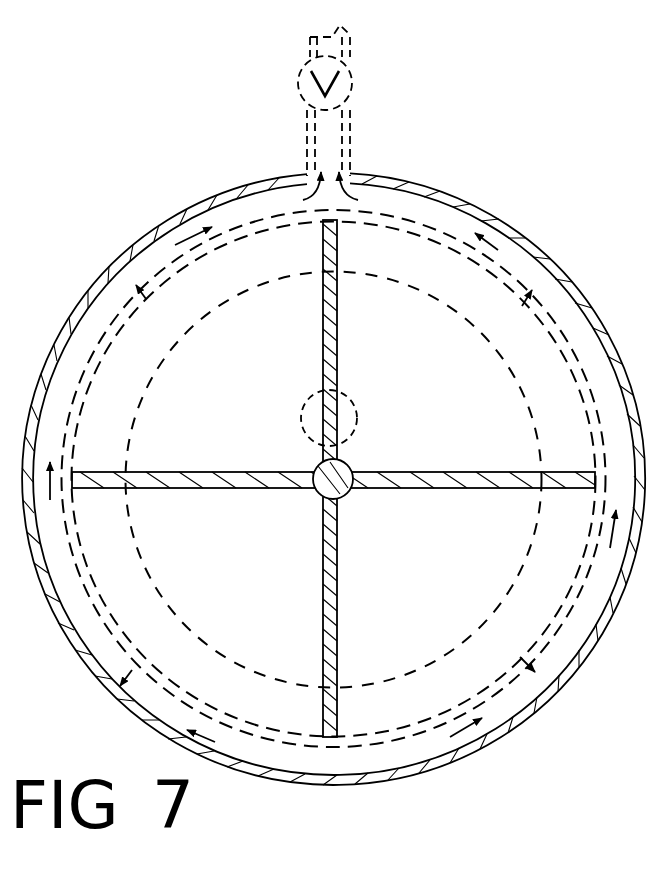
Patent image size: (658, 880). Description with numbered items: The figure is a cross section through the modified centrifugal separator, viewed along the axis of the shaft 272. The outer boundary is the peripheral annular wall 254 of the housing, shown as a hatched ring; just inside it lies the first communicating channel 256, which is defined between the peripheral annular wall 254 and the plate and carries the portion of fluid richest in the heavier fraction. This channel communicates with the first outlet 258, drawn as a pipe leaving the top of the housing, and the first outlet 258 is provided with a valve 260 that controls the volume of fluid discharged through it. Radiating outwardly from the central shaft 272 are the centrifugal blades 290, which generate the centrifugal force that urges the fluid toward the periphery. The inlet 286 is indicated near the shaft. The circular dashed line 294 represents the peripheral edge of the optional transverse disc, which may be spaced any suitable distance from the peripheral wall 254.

The peripheral annular wall 254 is at (408, 228).
The first communicating channel 256 is at (390, 198).
The first outlet 258 is at (337, 118).
The valve 260 is at (350, 80).
The shaft 272 is at (320, 487).
The inlet 286 is at (348, 425).
The centrifugal blades 290 is at (327, 355).
The circular dashed line (peripheral edge of transverse disc) 294 is at (130, 435).